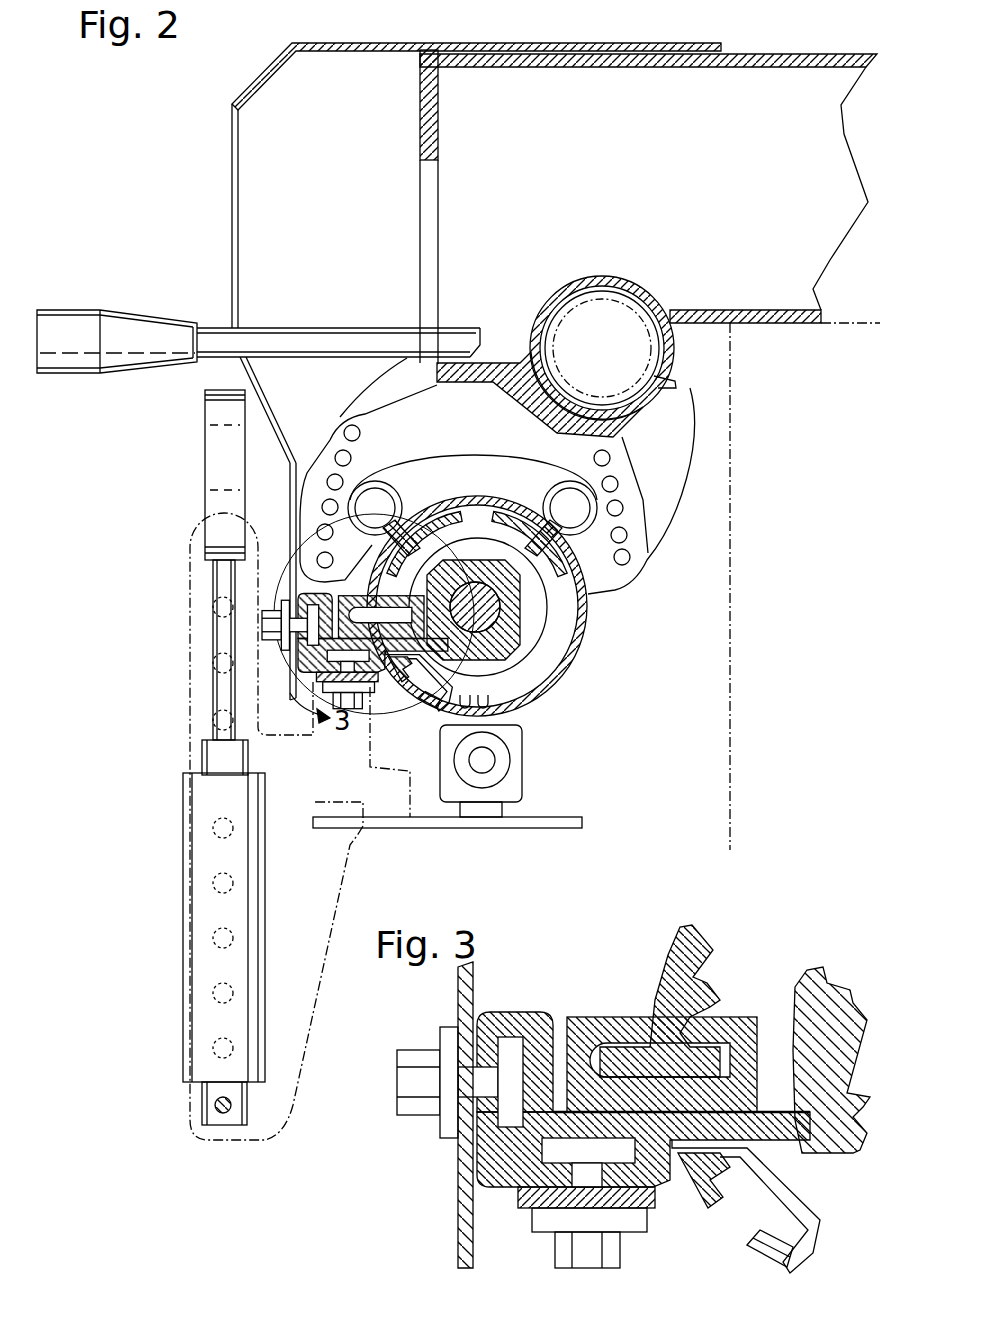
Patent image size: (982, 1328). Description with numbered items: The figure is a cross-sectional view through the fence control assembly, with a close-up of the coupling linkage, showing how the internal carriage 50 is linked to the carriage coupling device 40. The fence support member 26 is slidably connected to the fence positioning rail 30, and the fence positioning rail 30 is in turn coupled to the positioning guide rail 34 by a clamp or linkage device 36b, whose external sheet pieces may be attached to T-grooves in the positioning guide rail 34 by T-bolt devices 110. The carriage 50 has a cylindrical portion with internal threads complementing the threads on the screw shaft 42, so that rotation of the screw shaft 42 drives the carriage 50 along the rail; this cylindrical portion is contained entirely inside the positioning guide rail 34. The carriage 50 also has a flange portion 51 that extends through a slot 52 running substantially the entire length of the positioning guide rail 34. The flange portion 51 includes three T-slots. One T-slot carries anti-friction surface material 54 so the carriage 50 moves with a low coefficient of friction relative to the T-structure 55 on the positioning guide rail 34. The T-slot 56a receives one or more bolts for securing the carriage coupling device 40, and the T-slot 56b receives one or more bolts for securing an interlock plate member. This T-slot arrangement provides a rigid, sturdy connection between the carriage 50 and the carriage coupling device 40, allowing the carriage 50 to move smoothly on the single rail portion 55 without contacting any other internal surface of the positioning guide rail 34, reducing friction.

In FIG. 2, the carriage coupling device 40 is at (392, 43).
In FIG. 3, the carriage coupling device 40 is at (457, 1183).
In FIG. 2, the fence support member 26 is at (770, 100).
In FIG. 2, the fence positioning rail 30 is at (617, 378).
In FIG. 2, the linkage device 36b is at (573, 470).
In FIG. 2, the carriage 50 is at (453, 553).
In FIG. 3, the carriage 50 is at (800, 987).
In FIG. 2, the T-bolt devices 110 is at (533, 537).
In FIG. 2, the screw shaft 42 is at (467, 597).
In FIG. 2, the positioning guide rail 34 is at (547, 680).
In FIG. 3, the positioning guide rail 34 is at (662, 1050).
In FIG. 3, the T-structure 55 is at (664, 1058).
In FIG. 3, the T-slot 56a is at (508, 1053).
In FIG. 3, the anti-friction surface material 54 is at (608, 1040).
In FIG. 3, the slot 52 is at (730, 1133).
In FIG. 3, the flange portion 51 is at (688, 1128).
In FIG. 3, the T-slot 56b is at (565, 1157).